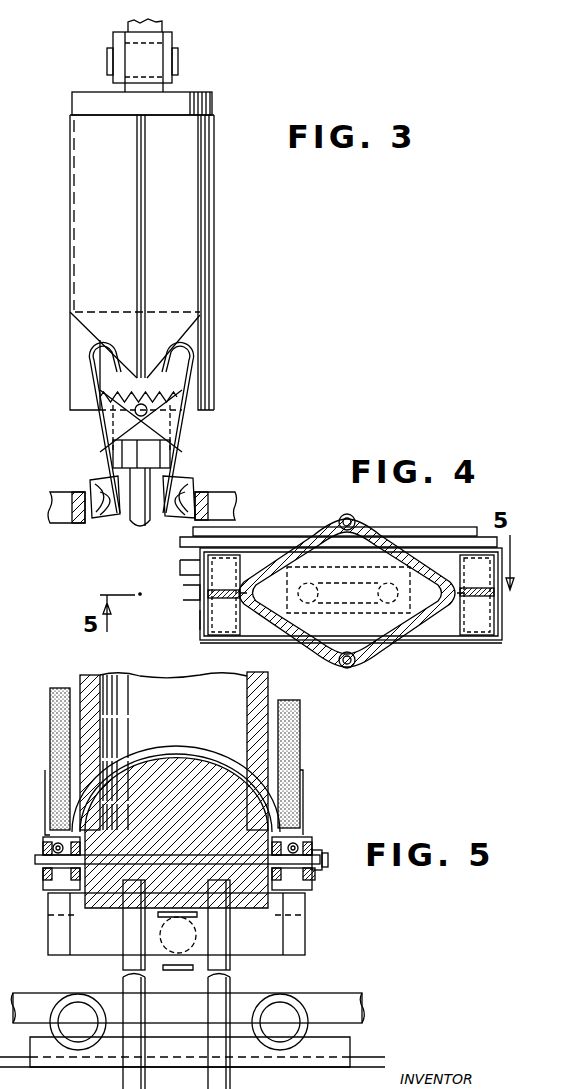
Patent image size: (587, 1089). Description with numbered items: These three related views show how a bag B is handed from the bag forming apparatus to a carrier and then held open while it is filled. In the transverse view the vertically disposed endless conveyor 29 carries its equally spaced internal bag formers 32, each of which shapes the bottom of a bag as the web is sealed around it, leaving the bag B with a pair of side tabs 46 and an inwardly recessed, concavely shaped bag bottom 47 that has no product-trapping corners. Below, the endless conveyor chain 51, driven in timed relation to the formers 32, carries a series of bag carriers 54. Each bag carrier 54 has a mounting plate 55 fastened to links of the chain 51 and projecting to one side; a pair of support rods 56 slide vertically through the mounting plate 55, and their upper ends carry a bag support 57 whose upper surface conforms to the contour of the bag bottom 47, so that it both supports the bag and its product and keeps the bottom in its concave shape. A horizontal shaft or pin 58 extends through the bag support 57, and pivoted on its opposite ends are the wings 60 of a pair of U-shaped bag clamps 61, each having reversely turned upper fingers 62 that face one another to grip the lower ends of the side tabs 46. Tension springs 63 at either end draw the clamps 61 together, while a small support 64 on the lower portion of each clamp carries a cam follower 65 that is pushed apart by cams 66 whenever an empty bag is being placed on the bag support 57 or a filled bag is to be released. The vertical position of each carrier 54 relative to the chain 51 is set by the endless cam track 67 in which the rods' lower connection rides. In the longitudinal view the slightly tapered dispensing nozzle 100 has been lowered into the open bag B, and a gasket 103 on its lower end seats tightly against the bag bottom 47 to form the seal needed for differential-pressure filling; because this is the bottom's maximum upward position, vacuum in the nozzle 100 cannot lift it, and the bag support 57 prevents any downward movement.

In FIG. 3, the endless conveyor 29 is at (172, 42).
In FIG. 3, the internal bag former 32 is at (212, 104).
In FIG. 3, the side tabs 46 is at (143, 250).
In FIG. 5, the side tabs 46 is at (52, 738).
In FIG. 5, the bag bottom 47 is at (190, 760).
In FIG. 4, the chain 51 is at (305, 527).
In FIG. 5, the chain 51 is at (340, 1000).
In FIG. 5, the bag carrier 54 is at (318, 946).
In FIG. 5, the mounting plate 55 is at (245, 1000).
In FIG. 3, the support rods 56 is at (143, 528).
In FIG. 5, the support rods 56 is at (215, 1070).
In FIG. 3, the bag support 57 is at (212, 357).
In FIG. 5, the bag support 57 is at (216, 833).
In FIG. 3, the horizontal shaft or pin 58 is at (133, 411).
In FIG. 4, the horizontal shaft or pin 58 is at (200, 592).
In FIG. 5, the horizontal shaft or pin 58 is at (225, 857).
In FIG. 3, the wings 60 is at (110, 438).
In FIG. 4, the wings 60 is at (505, 650).
In FIG. 5, the wings 60 is at (44, 884).
In FIG. 3, the bag clamp 61 is at (110, 454).
In FIG. 5, the bag clamp 61 is at (48, 936).
In FIG. 3, the upper fingers 62 is at (110, 332).
In FIG. 4, the upper fingers 62 is at (472, 560).
In FIG. 5, the upper fingers 62 is at (45, 788).
In FIG. 5, the tension springs 63 is at (46, 840).
In FIG. 3, the small support 64 is at (190, 482).
In FIG. 5, the small support 64 is at (162, 972).
In FIG. 3, the cam follower 65 is at (92, 496).
In FIG. 5, the cam follower 65 is at (232, 934).
In FIG. 3, the cams 66 is at (230, 508).
In FIG. 4, the cam track 67 is at (172, 630).
In FIG. 4, the dispensing nozzle 100 is at (376, 544).
In FIG. 5, the dispensing nozzle 100 is at (90, 678).
In FIG. 5, the gasket 103 is at (128, 755).
In FIG. 3, the bag B is at (214, 255).
In FIG. 4, the bag B is at (347, 600).
In FIG. 5, the bag B is at (282, 702).